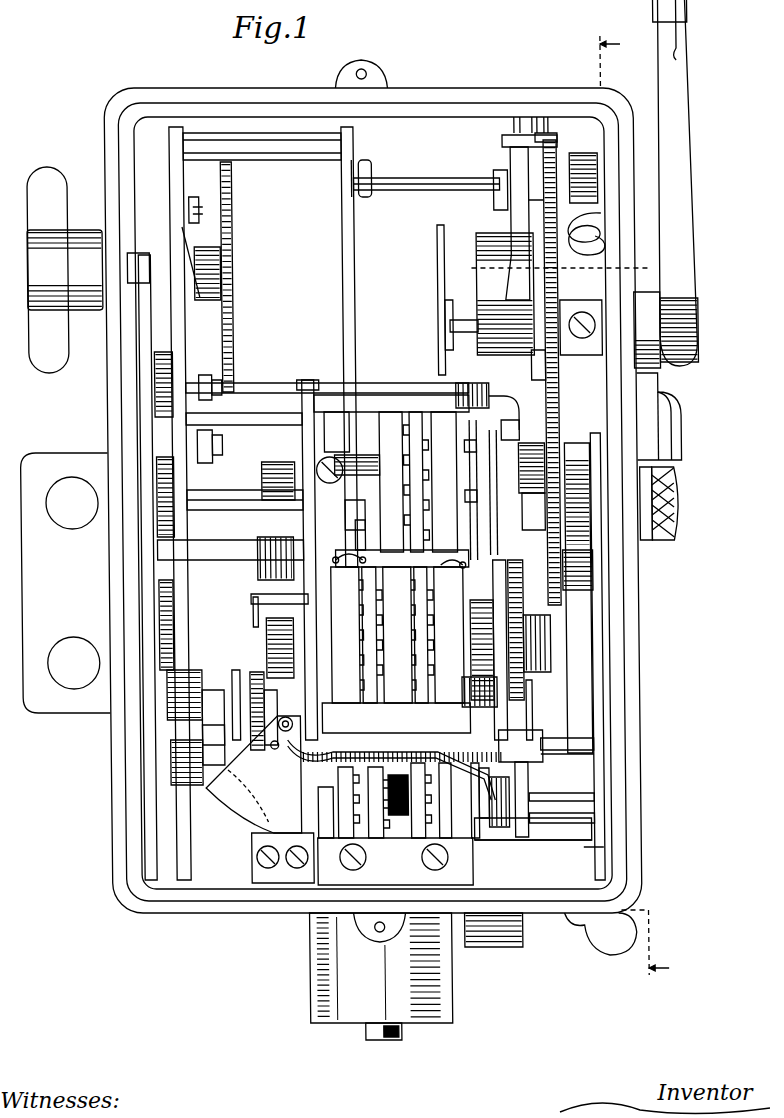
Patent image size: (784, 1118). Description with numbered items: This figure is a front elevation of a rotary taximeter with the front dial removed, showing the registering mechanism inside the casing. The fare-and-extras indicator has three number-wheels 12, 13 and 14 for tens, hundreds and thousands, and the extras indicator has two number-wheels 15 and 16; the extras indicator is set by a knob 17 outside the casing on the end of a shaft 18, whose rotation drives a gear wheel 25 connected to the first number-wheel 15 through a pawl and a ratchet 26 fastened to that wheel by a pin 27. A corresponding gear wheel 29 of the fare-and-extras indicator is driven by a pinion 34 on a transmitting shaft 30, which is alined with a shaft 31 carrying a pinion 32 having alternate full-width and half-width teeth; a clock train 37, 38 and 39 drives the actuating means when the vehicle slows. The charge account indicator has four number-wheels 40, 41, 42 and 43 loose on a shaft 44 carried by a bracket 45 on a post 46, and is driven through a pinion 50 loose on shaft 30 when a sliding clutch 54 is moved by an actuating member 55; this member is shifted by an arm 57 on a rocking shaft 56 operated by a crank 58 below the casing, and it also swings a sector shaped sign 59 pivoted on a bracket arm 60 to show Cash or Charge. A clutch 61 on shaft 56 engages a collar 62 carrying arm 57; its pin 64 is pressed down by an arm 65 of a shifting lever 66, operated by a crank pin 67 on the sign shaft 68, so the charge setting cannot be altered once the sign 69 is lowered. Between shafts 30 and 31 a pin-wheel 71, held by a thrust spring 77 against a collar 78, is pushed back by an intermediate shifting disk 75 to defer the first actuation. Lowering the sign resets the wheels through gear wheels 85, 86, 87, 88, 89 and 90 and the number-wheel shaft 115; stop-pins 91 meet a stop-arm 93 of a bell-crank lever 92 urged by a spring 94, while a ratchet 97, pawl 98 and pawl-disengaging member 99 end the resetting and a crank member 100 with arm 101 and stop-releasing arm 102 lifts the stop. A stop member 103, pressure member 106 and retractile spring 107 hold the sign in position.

The number-wheel 12 is at (450, 700).
The number-wheel 13 is at (397, 645).
The number-wheel 14 is at (396, 718).
The number-wheel 15 is at (432, 410).
The number-wheel 16 is at (388, 405).
The knob 17 is at (680, 492).
The shaft 18 is at (215, 510).
The gear wheel 25 is at (529, 468).
The ratchet 26 is at (475, 455).
The pin 27 is at (500, 432).
The gear wheel 29 is at (490, 665).
The shaft 30 is at (555, 745).
The shaft 31 is at (165, 740).
The pinion 32 is at (172, 772).
The pinion 34 is at (521, 746).
The clock train 37 is at (170, 633).
The clock train 38 is at (170, 523).
The clock train 39 is at (172, 382).
The number-wheel 40 is at (398, 824).
The number-wheel 41 is at (425, 804).
The number-wheel 42 is at (365, 846).
The number-wheel 43 is at (331, 818).
The shaft 44 is at (358, 800).
The bracket 45 is at (446, 857).
The post 46 is at (580, 847).
The pinion 50 is at (460, 700).
The sliding clutch 54 is at (417, 724).
The sliding clutch actuating member 55 is at (391, 757).
The rocking shaft 56 is at (500, 913).
The arm 57 is at (504, 797).
The crank 58 is at (603, 950).
The sector shaped sign 59 is at (253, 774).
The bracket arm 60 is at (268, 836).
The clutch 61 is at (533, 813).
The collar 62 is at (520, 788).
The pin 64 is at (533, 848).
The projecting arm 65 is at (540, 816).
The shifting lever 66 is at (440, 268).
The crank pin 67 is at (460, 330).
The sign shaft 68 is at (658, 283).
The sign 69 is at (694, 190).
The pin-wheel 71 is at (285, 720).
The intermediate shifting disk 75 is at (255, 700).
The thrust spring 77 is at (335, 713).
The collar 78 is at (349, 727).
The gear wheel 85 is at (560, 170).
The gear wheel 86 is at (563, 458).
The gear wheel 87 is at (576, 550).
The gear wheel 88 is at (522, 596).
The gear wheel 89 is at (532, 511).
The gear wheel 90 is at (540, 630).
The stop-pin 91 is at (340, 560).
The bell-crank lever 92 is at (345, 398).
The stop-arm 93 is at (401, 627).
The spring 94 is at (298, 558).
The ratchet 97 is at (534, 368).
The pawl 98 is at (535, 282).
The pawl-disengaging member 99 is at (506, 155).
The crank member 100 is at (500, 223).
The inwardly projecting arm 101 is at (424, 190).
The stop-releasing arm 102 is at (375, 165).
The stop member 103 is at (604, 270).
The pressure member 106 is at (604, 213).
The retractile spring 107 is at (580, 313).
The number-wheel shaft 115 is at (682, 420).